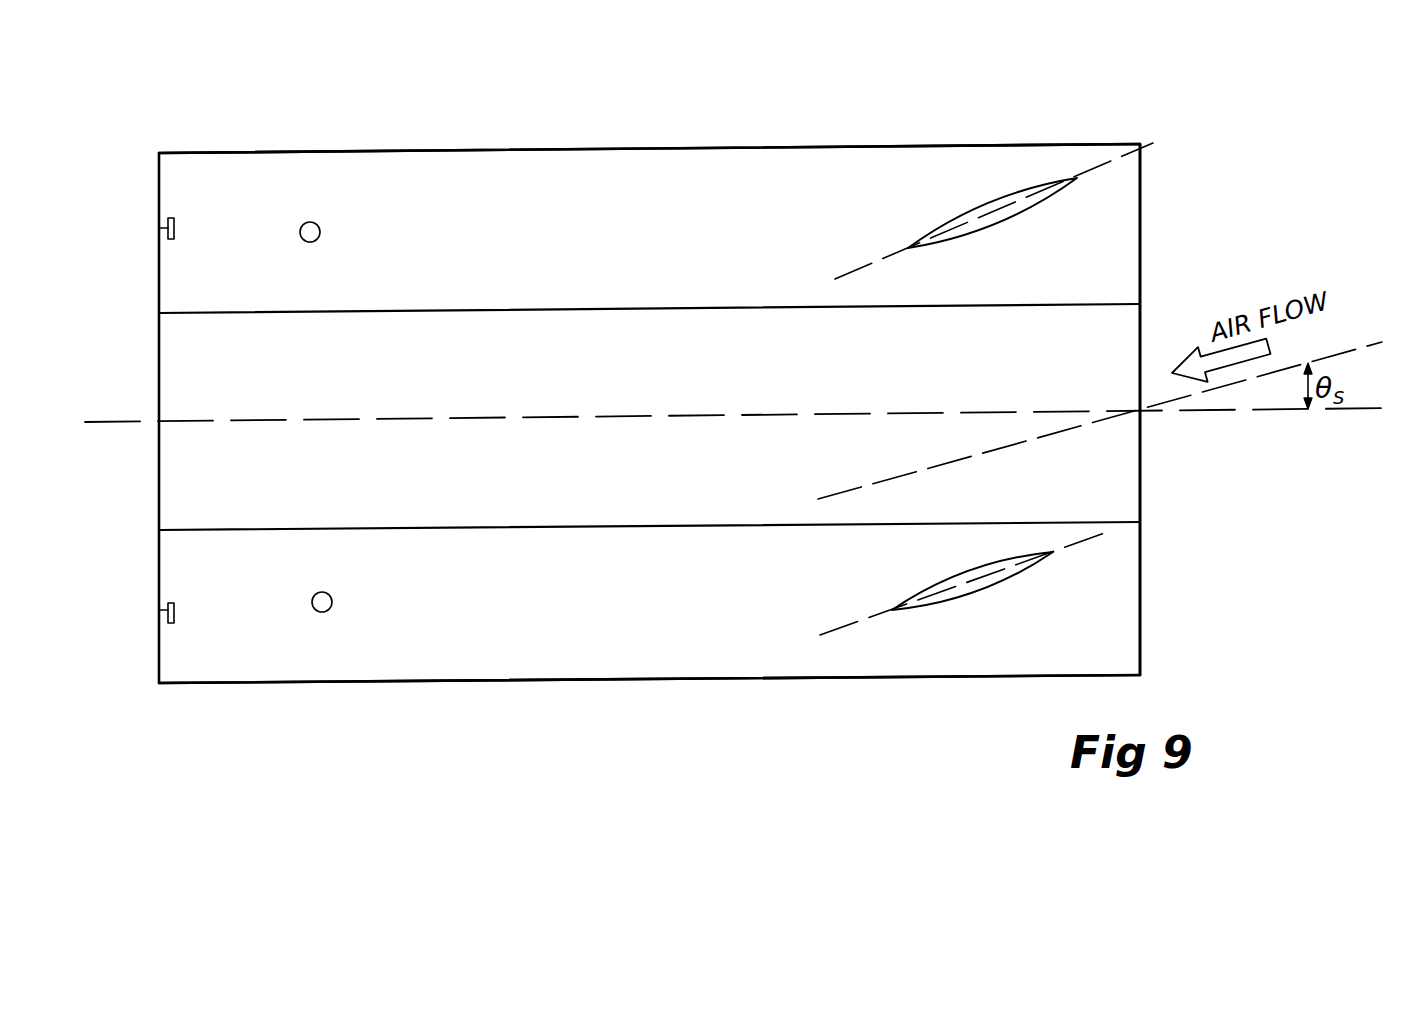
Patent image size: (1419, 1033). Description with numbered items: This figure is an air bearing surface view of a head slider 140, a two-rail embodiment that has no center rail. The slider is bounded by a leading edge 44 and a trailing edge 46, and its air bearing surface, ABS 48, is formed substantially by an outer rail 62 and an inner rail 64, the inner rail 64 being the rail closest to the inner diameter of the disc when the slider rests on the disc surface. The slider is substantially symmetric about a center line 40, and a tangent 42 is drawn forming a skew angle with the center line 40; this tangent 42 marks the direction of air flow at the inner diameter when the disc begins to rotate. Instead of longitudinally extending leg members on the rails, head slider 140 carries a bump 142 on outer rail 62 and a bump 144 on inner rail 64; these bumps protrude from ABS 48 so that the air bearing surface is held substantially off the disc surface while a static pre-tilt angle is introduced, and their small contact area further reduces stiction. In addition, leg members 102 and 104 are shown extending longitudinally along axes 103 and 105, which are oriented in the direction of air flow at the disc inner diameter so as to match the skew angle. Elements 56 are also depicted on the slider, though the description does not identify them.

The head slider 140 is at (649, 358).
The outer rail 62 is at (612, 165).
The inner rail 64 is at (632, 663).
The leading edge 44 is at (1140, 603).
The trailing edge 46 is at (158, 325).
The air bearing surface (ABS) 48 is at (505, 632).
The heater element 56 is at (160, 228).
The bump 142 is at (319, 226).
The bump 144 is at (330, 596).
The leg member 102 is at (963, 242).
The axis 103 is at (1097, 170).
The leg member 104 is at (953, 605).
The axis 105 is at (1083, 543).
The center line 40 is at (1368, 413).
The tangent 42 is at (1363, 347).